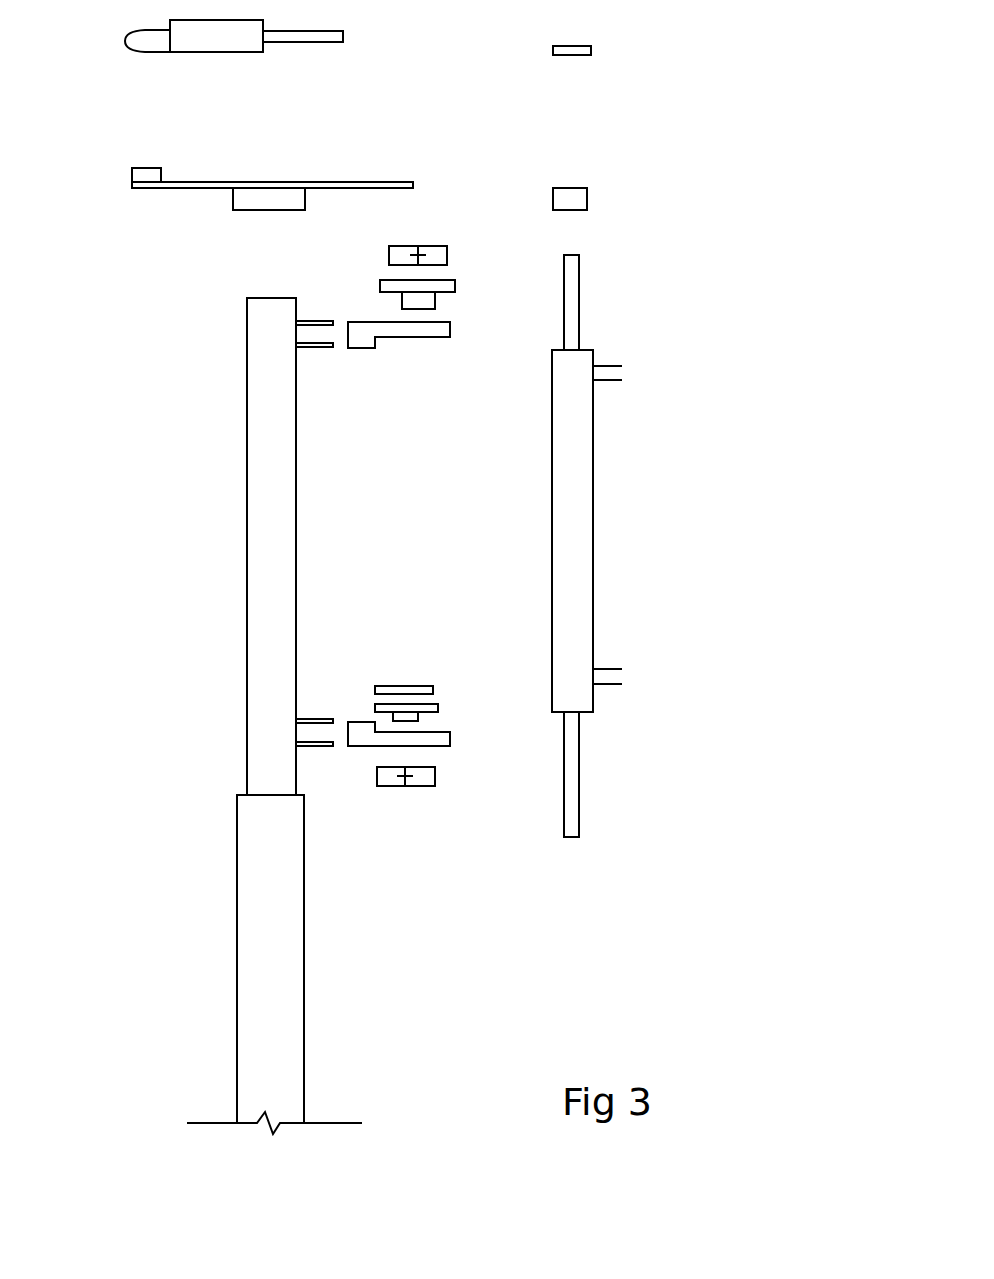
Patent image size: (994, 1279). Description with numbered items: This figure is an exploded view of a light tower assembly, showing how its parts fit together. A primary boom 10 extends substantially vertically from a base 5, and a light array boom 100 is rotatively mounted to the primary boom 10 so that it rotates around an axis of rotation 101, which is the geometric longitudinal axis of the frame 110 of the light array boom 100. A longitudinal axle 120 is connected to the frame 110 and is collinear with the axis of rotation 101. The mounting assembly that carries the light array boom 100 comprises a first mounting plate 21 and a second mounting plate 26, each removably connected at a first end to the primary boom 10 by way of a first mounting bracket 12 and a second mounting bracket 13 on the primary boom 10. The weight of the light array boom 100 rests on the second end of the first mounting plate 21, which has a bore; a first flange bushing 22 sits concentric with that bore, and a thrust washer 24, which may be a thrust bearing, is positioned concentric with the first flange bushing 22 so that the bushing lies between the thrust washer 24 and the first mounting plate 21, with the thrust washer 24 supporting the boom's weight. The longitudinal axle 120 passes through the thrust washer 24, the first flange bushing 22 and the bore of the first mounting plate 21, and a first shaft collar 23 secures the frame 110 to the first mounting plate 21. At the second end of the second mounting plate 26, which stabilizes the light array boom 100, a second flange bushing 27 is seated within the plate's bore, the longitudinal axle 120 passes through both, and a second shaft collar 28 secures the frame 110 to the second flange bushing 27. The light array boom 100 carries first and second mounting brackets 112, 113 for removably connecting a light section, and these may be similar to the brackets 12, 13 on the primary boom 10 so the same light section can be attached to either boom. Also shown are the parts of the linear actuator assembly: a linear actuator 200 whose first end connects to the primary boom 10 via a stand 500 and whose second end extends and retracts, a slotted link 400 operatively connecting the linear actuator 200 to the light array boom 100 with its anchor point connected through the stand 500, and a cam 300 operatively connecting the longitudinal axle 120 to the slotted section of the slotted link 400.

The base 5 is at (255, 853).
The primary boom 10 is at (218, 546).
The first mounting bracket 12 is at (313, 719).
The second mounting bracket 13 is at (315, 346).
The first mounting plate 21 is at (443, 740).
The first flange bushing 22 is at (432, 708).
The first shaft collar 23 is at (427, 776).
The thrust washer 24 is at (430, 692).
The second mounting plate 26 is at (445, 330).
The second flange bushing 27 is at (448, 285).
The second shaft collar 28 is at (440, 252).
The light array boom 100 is at (675, 536).
The axis of rotation 101 is at (570, 275).
The frame 110 is at (580, 452).
The first mounting bracket 112 is at (615, 668).
The second mounting bracket 113 is at (612, 365).
The longitudinal axle 120 is at (577, 755).
The linear actuator 200 is at (307, 38).
The cam 300 is at (585, 190).
The slotted link 400 is at (580, 50).
The stand 500 is at (330, 182).